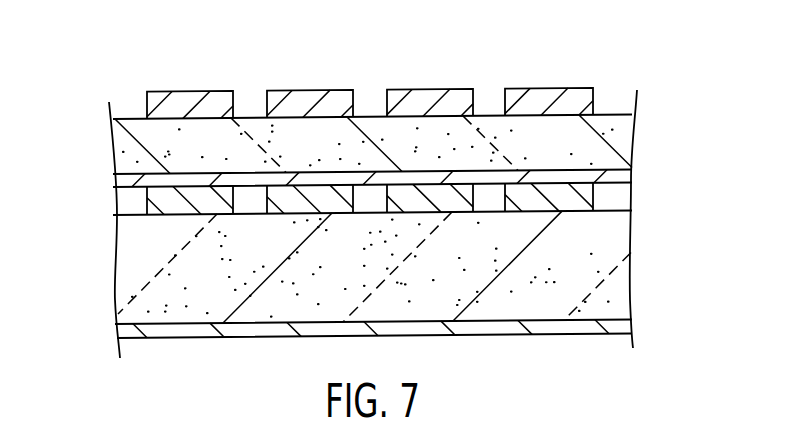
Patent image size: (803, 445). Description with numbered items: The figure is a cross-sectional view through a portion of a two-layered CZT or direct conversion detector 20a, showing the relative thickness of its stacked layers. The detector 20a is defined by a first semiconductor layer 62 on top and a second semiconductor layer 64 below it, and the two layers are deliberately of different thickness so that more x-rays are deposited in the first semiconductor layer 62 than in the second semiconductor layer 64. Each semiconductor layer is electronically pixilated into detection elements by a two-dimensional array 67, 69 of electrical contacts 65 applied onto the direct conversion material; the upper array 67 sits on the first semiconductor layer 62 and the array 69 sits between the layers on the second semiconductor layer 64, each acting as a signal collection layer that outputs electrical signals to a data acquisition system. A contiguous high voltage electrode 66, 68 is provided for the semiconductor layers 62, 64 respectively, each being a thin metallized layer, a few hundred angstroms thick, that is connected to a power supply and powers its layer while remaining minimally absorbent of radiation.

The two-layered direct conversion detector 20a is at (86, 110).
The first semiconductor layer 62 is at (613, 133).
The second semiconductor layer 64 is at (610, 245).
The electrical contacts 65 is at (305, 90).
The high voltage electrode 66 is at (618, 176).
The 2D array 67 is at (627, 69).
The high voltage electrode 68 is at (617, 325).
The 2D array 69 is at (620, 201).